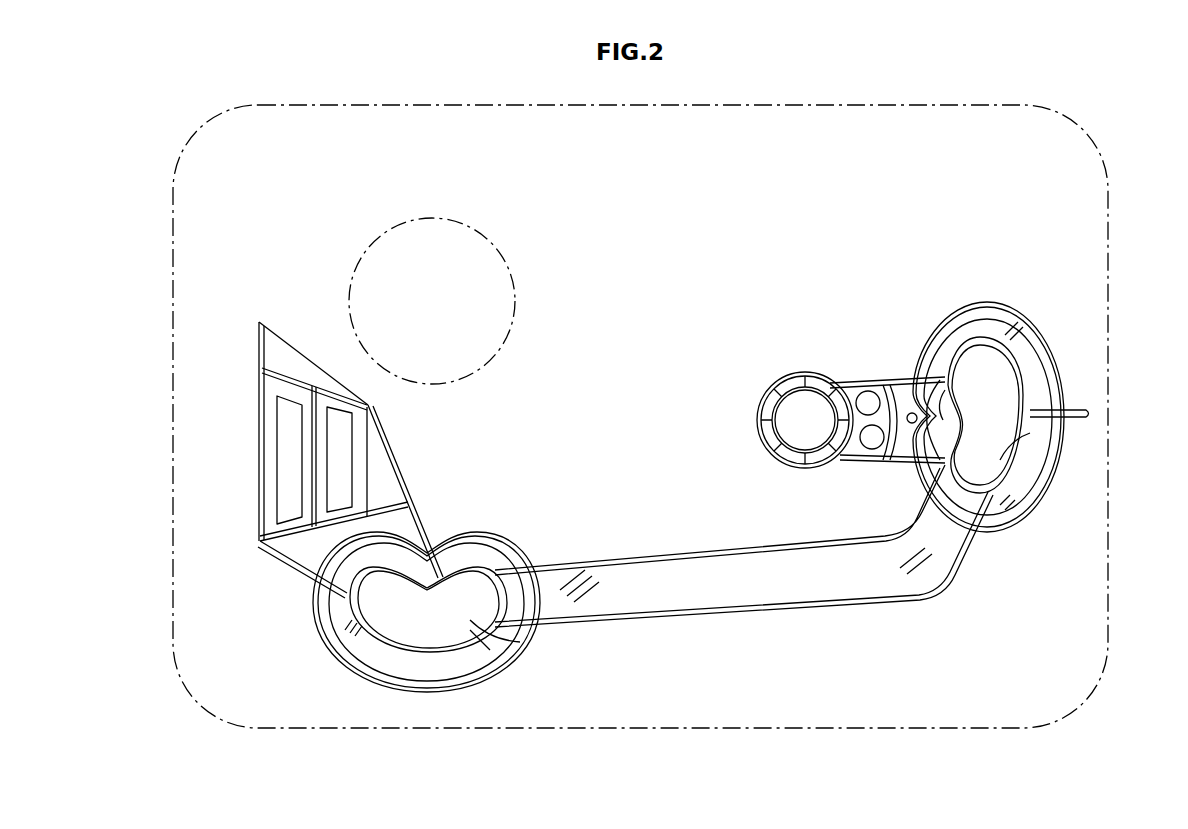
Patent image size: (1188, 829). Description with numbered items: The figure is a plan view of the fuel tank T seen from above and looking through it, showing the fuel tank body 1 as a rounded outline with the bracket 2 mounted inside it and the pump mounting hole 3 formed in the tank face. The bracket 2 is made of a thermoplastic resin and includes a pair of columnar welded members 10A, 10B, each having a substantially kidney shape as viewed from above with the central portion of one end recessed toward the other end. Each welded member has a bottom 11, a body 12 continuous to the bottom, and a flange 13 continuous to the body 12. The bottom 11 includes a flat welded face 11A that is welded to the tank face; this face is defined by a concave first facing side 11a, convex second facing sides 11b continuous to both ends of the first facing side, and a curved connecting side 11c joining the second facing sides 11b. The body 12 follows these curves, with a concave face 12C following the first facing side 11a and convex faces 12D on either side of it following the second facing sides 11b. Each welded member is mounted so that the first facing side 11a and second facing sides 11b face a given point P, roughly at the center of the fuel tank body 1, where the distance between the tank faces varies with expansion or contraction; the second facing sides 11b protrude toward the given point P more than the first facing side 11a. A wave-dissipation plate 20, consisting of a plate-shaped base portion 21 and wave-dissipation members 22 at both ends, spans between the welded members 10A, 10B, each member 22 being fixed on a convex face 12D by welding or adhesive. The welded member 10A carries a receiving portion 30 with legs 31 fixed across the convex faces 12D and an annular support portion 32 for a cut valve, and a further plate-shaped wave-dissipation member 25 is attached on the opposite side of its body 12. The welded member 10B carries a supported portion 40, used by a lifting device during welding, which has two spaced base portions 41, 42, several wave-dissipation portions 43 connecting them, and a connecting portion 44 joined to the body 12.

The fuel tank body 1 is at (1108, 213).
The bracket 2 is at (776, 689).
The pump mounting hole 3 is at (478, 260).
The welded member 10A is at (1045, 340).
The welded member 10B is at (487, 528).
The bottom 11 is at (378, 640).
The welded face 11A is at (372, 608).
The first facing side 11a is at (425, 555).
The second facing sides 11b is at (400, 540).
The connecting side 11c is at (1035, 433).
The body 12 is at (485, 645).
The concave face 12C is at (920, 365).
The convex faces 12D is at (520, 608).
The flange 13 is at (535, 545).
The wave-dissipation plate 20 is at (744, 571).
The base portion 21 is at (785, 588).
The wave-dissipation members 22 is at (662, 556).
The wave-dissipation member 25 is at (1092, 413).
The receiving portion 30 is at (835, 417).
The legs 31 is at (840, 380).
The support portion 32 is at (772, 392).
The supported portion 40 is at (332, 436).
The base portion 41 is at (322, 393).
The base portion 42 is at (385, 503).
The wave-dissipation portions 43 is at (300, 458).
The connecting portion 44 is at (290, 562).
The given point P is at (606, 396).
The fuel tank T is at (1102, 120).